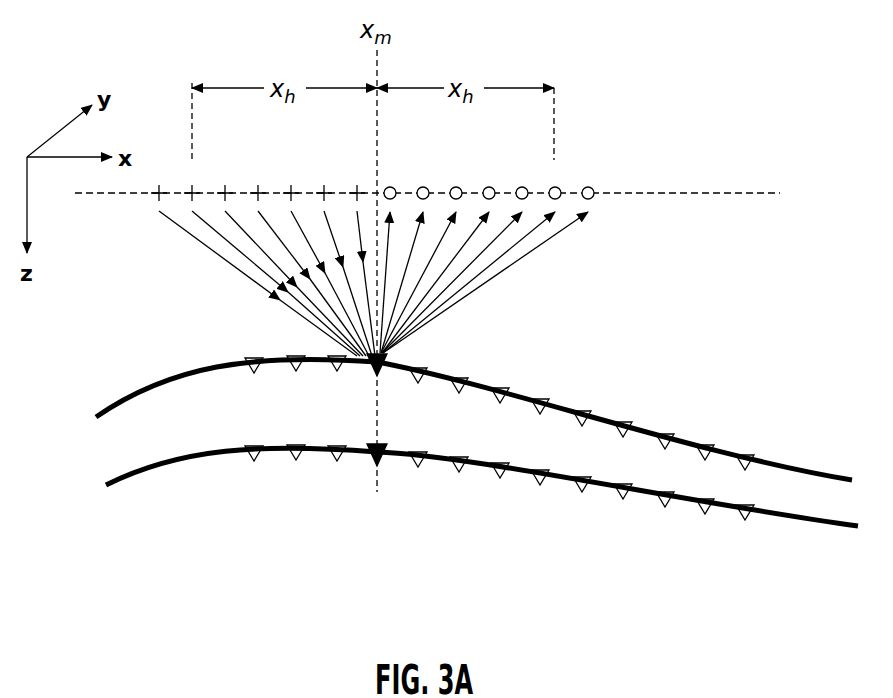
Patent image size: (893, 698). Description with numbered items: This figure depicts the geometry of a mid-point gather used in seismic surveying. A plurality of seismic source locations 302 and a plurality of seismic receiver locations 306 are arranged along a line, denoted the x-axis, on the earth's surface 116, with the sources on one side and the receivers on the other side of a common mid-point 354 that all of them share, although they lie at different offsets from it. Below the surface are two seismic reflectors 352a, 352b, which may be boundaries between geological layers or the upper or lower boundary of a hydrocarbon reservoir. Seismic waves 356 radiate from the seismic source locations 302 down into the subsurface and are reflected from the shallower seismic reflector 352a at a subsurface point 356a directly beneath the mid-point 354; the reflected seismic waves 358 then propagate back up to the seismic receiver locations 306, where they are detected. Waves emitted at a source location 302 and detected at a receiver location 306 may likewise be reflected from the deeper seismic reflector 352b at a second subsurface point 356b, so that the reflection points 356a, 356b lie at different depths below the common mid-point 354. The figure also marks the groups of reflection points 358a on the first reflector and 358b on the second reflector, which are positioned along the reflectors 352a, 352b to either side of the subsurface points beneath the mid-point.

The earth's surface 116 is at (745, 193).
The seismic source locations 302 is at (291, 186).
The seismic receiver locations 306 is at (588, 186).
The common mid-point 354 is at (377, 118).
The seismic waves 356 is at (263, 288).
The reflected seismic waves 358 is at (480, 288).
The seismic reflector 352a is at (820, 473).
The seismic reflector 352b is at (820, 527).
The subsurface point 356a is at (375, 368).
The subsurface point 356b is at (375, 460).
The reflection points on first interface 358a is at (745, 454).
The reflection points on second interface 358b is at (418, 467).